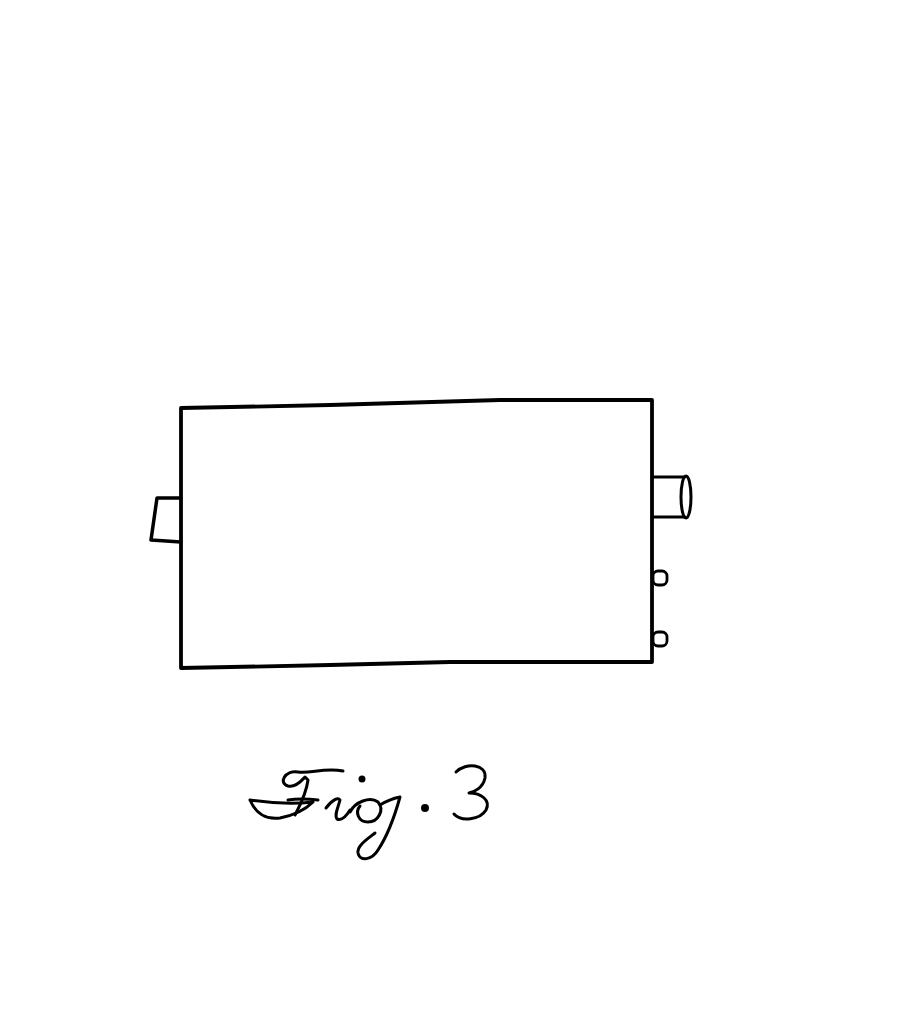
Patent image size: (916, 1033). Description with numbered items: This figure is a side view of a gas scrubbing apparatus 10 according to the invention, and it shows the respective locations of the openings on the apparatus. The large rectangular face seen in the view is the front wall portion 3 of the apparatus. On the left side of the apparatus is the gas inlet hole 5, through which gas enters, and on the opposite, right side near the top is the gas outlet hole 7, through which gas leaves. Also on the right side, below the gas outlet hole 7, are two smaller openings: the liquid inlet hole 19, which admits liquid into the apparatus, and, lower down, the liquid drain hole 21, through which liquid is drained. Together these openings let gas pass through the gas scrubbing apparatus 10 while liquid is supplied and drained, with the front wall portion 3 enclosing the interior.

The gas scrubbing apparatus 10 is at (766, 88).
The front wall portion 3 is at (448, 483).
The gas inlet hole 5 is at (170, 515).
The gas outlet hole 7 is at (672, 490).
The liquid inlet hole 19 is at (830, 522).
The liquid drain hole 21 is at (851, 655).